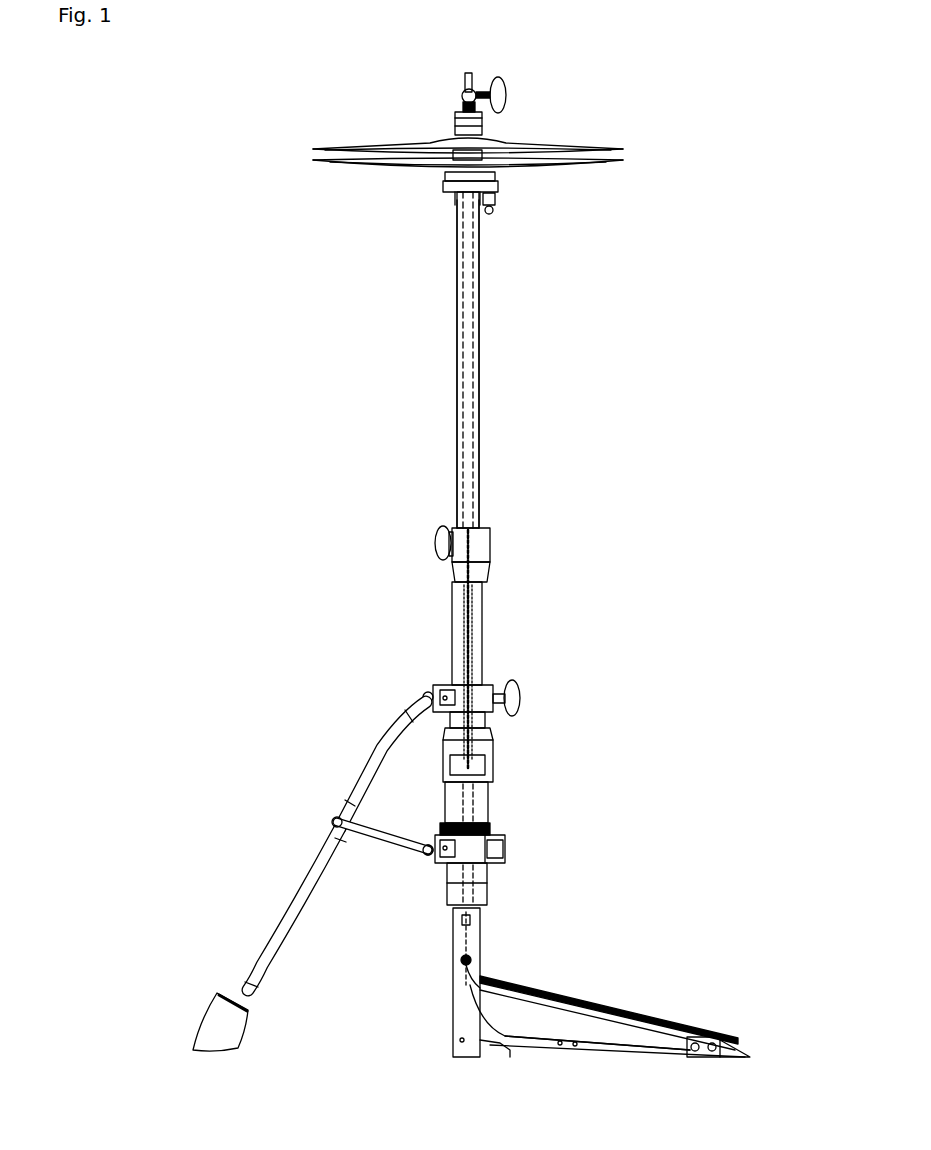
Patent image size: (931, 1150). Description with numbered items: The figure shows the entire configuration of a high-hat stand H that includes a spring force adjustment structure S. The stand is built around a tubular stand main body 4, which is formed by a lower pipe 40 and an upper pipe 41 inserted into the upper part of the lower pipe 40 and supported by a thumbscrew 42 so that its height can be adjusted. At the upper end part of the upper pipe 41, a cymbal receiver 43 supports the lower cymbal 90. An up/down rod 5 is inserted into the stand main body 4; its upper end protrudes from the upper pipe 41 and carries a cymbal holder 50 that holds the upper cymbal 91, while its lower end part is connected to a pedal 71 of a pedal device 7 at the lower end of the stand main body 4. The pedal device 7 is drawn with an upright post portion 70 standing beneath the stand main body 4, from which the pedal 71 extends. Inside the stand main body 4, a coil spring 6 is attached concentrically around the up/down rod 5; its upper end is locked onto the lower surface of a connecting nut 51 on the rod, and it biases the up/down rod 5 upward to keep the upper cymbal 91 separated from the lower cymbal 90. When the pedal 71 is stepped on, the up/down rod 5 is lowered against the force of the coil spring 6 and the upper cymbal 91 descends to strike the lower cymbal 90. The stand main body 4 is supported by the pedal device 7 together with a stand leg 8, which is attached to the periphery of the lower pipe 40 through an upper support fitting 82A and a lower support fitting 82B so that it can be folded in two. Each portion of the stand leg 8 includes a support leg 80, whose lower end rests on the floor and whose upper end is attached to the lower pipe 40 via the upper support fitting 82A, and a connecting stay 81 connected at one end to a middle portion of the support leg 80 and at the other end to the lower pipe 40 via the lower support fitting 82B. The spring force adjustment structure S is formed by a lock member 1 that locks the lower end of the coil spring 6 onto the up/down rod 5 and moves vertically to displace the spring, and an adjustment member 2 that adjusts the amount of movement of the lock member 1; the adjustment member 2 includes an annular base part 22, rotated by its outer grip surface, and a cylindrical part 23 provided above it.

The up/down rod 5 is at (462, 85).
The cymbal holder 50 is at (455, 118).
The upper cymbal 91 is at (548, 137).
The lower cymbal 90 is at (555, 170).
The cymbal receiver 43 is at (445, 183).
The stand main body 4 is at (478, 290).
The upper pipe 41 is at (478, 378).
The connecting nut 51 is at (480, 516).
The thumbscrew 42 is at (435, 553).
The coil spring 6 is at (483, 598).
The lower pipe 40 is at (483, 633).
The upper support fitting 82A is at (518, 685).
The lock member 1 is at (493, 762).
The cylindrical part 23 is at (485, 792).
The adjustment member 2 is at (485, 803).
The annular base part 22 is at (490, 828).
The lower support fitting 82B is at (505, 856).
The stand leg 8 is at (372, 758).
The support leg 80 is at (290, 888).
The connecting stay 81 is at (375, 843).
The pedal post 70 is at (455, 1023).
The pedal 71 is at (556, 995).
The pedal device 7 is at (617, 1010).
The high-hat stand H is at (601, 369).
The spring force adjustment structure S is at (594, 708).